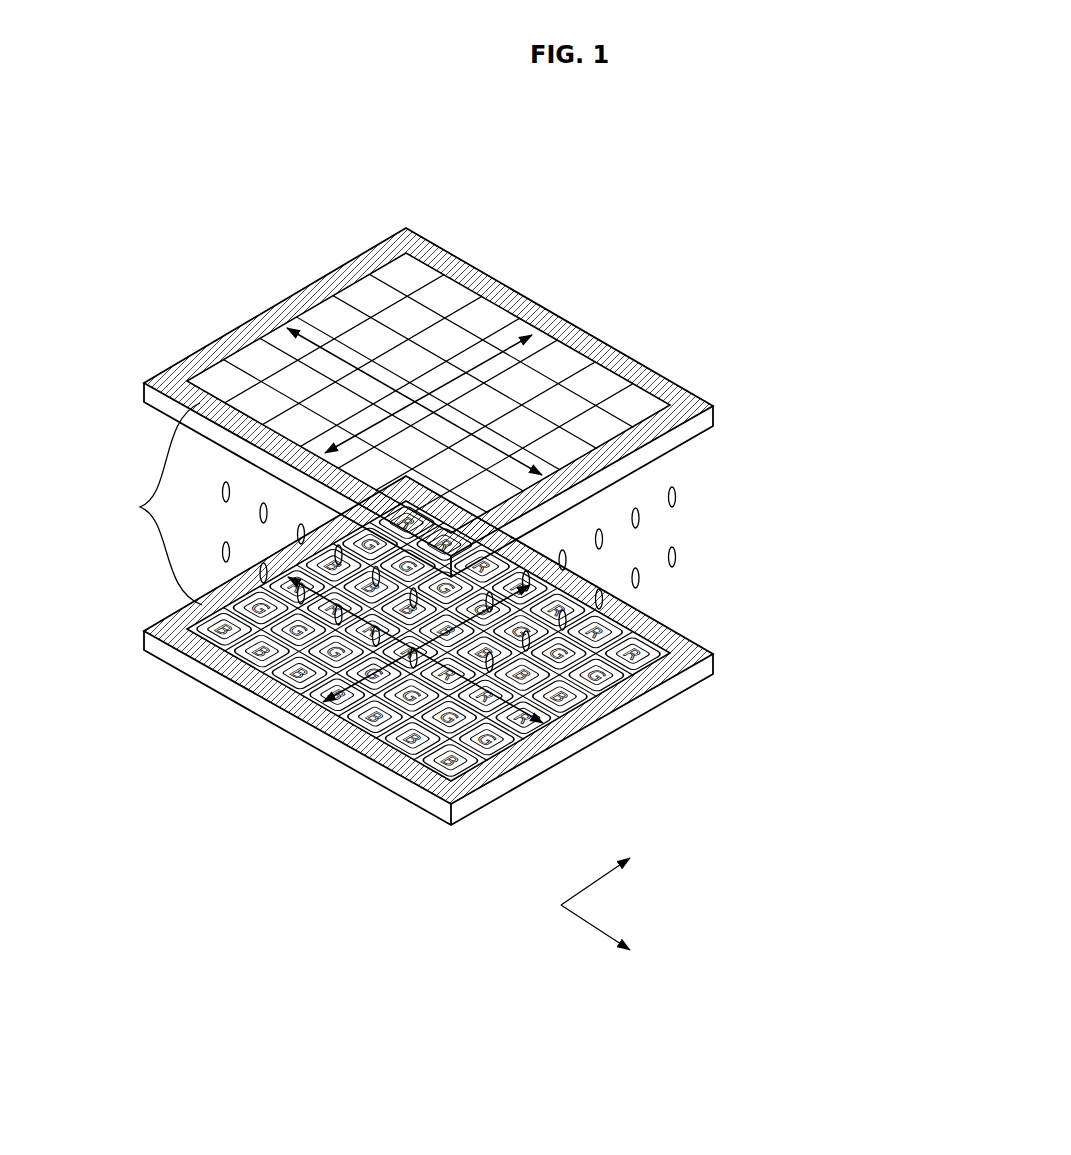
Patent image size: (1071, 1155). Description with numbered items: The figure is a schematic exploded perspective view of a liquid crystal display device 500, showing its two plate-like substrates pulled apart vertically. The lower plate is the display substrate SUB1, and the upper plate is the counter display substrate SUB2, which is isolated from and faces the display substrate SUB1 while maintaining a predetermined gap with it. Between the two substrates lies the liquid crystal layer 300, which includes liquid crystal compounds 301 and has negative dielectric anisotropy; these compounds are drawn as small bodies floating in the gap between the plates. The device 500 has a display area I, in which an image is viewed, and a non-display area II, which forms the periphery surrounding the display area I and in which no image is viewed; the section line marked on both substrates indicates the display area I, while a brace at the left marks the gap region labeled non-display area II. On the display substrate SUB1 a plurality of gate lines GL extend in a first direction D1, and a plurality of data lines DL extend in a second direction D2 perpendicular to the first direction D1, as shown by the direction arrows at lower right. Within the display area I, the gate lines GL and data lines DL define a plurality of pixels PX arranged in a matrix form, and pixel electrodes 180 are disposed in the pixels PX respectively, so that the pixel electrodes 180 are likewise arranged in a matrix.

The liquid crystal display device 500 is at (568, 170).
The counter display substrate SUB2 is at (683, 375).
The display substrate SUB1 is at (470, 669).
The liquid crystal layer 300 is at (680, 495).
The liquid crystal compounds 301 is at (680, 558).
The pixel electrode 180 is at (648, 662).
The pixel PX is at (576, 705).
The gate line GL is at (627, 685).
The data line DL is at (615, 632).
The display area I is at (313, 343).
The non-display area II is at (156, 504).
The first direction D1 is at (615, 936).
The second direction D2 is at (615, 874).